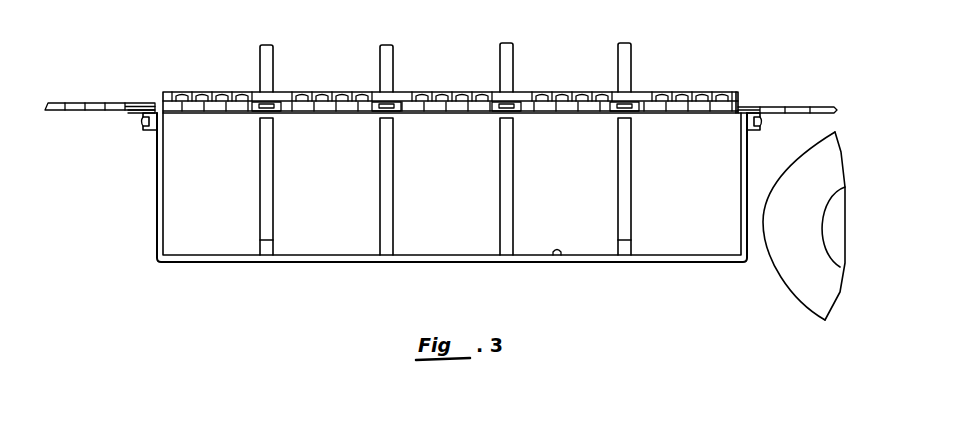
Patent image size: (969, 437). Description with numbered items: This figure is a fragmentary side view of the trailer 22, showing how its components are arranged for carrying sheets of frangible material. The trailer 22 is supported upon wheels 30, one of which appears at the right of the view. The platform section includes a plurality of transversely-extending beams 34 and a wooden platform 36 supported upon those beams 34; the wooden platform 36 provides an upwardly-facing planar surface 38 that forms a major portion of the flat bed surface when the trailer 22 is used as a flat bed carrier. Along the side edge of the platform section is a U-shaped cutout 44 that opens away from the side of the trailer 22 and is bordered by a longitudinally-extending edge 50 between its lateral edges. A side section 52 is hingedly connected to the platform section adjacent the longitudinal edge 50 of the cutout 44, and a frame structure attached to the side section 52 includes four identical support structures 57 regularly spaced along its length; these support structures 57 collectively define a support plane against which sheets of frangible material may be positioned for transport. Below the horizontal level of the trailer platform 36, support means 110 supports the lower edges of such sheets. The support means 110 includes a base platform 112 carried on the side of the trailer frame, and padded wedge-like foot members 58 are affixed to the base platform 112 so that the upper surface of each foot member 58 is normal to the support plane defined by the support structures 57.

The trailer 22 is at (182, 57).
The wheels 30 is at (780, 280).
The transversely-extending beams 34 is at (143, 123).
The wooden platform 36 is at (77, 102).
The upwardly-facing planar surface 38 is at (118, 103).
The U-shaped cutout 44 is at (740, 100).
The longitudinally-extending edge 50 is at (553, 110).
The side section 52 is at (217, 92).
The support structures 57 is at (270, 65).
The padded wedge-like foot members 58 is at (268, 248).
The support means 110 is at (212, 268).
The base platform 112 is at (557, 257).